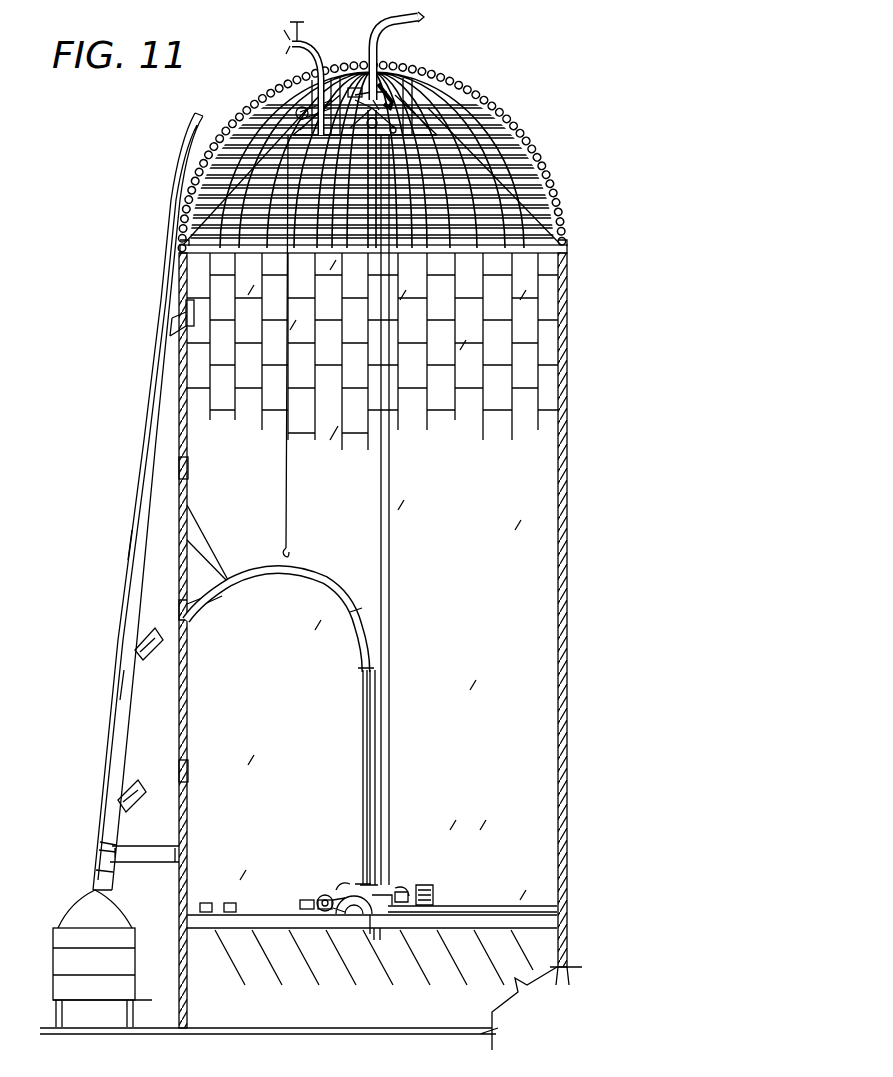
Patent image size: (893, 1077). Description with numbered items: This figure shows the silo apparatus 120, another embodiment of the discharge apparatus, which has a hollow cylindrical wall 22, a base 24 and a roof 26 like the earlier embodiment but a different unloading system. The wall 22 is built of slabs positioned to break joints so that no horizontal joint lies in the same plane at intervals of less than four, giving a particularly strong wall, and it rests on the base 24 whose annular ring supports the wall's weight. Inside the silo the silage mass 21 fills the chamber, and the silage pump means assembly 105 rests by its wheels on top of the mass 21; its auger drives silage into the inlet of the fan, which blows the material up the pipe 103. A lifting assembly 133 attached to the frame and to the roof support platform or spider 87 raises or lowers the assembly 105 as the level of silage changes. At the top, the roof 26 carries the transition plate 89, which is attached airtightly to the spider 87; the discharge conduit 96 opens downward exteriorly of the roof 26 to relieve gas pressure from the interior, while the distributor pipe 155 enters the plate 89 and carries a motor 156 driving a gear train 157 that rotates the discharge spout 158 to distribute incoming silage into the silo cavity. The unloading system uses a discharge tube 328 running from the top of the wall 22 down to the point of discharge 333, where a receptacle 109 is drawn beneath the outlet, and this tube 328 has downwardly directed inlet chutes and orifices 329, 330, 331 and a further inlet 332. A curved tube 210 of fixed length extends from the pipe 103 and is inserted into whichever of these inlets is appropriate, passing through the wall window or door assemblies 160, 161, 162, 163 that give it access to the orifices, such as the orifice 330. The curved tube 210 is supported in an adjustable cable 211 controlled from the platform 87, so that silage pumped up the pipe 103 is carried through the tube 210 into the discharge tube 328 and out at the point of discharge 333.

The silage mass 21 is at (332, 1017).
The hollow cylindrical wall 22 is at (576, 601).
The base 24 is at (360, 1036).
The roof 26 is at (574, 239).
The spider 87 is at (280, 90).
The transition plate 89 is at (395, 64).
The discharge conduit 96 is at (288, 40).
The pipe 103 is at (378, 835).
The silage pump means assembly 105 is at (298, 905).
The feed bin 109 is at (135, 953).
The apparatus 120 is at (576, 482).
The lifting assembly 133 is at (390, 612).
The distributor pipe 155 is at (378, 38).
The motor 156 is at (305, 82).
The gear train 157 is at (360, 60).
The discharge spout 158 is at (418, 78).
The door assembly 160 is at (186, 304).
The door assembly 161 is at (192, 473).
The door assembly 162 is at (192, 613).
The window 163 is at (190, 777).
The curved tube 210 is at (326, 580).
The adjustable cable 211 is at (288, 483).
The discharge tube 328 is at (140, 369).
The inlet chute 329 is at (146, 445).
The inlet chute 330 is at (145, 636).
The inlet chute 331 is at (128, 786).
The inlet 332 is at (184, 322).
The point of discharge 333 is at (96, 892).